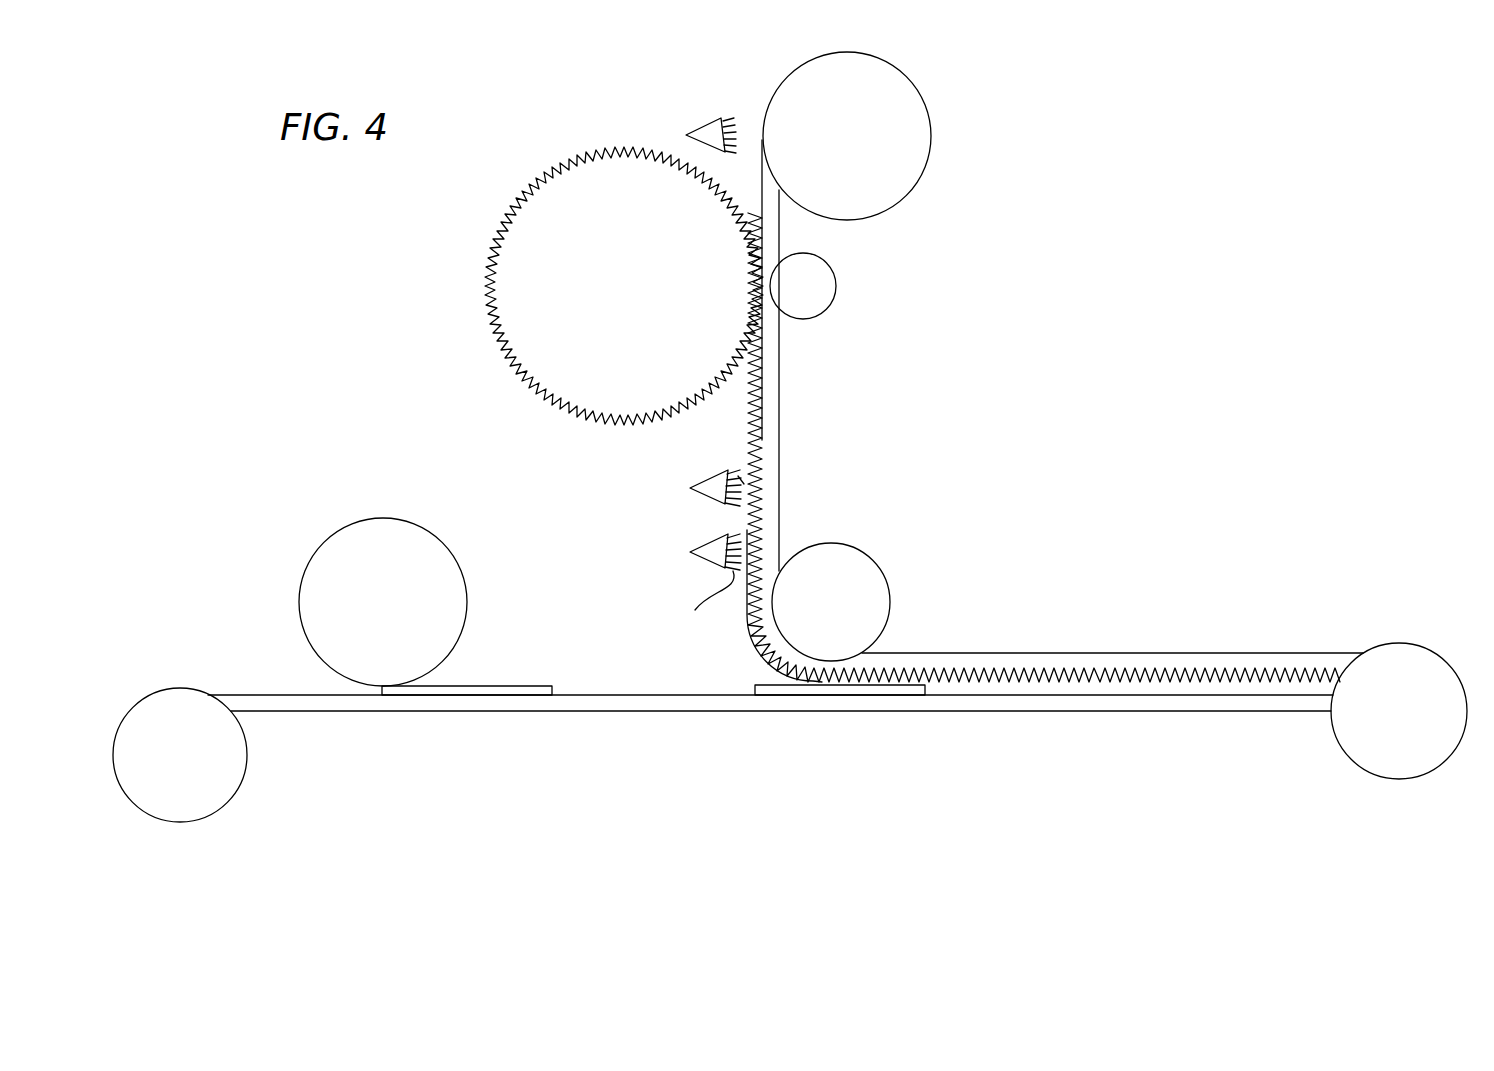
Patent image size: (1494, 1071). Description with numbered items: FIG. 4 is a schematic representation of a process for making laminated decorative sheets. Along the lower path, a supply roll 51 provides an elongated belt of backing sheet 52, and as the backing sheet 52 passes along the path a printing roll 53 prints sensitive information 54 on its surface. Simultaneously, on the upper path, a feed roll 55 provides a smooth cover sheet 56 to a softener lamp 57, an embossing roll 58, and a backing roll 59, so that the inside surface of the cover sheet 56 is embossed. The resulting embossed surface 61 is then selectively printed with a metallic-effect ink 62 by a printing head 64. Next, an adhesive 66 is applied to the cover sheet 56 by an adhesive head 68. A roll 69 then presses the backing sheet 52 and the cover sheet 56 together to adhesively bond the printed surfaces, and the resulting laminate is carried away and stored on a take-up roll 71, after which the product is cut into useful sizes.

The supply roll 51 is at (230, 770).
The backing sheet 52 is at (670, 703).
The printing roll 53 is at (393, 543).
The sensitive information 54 is at (503, 690).
The feed roll 55 is at (915, 115).
The cover sheet 56 is at (777, 238).
The softener lamp 57 is at (702, 127).
The embossing roll 58 is at (547, 213).
The backing roll 59 is at (818, 292).
The embossed surface 61 is at (758, 432).
The metallic-effect ink 62 is at (741, 480).
The printing head 64 is at (690, 488).
The adhesive 66 is at (757, 528).
The adhesive head 68 is at (690, 552).
The roll 69 is at (860, 582).
The take-up roll 71 is at (1392, 660).